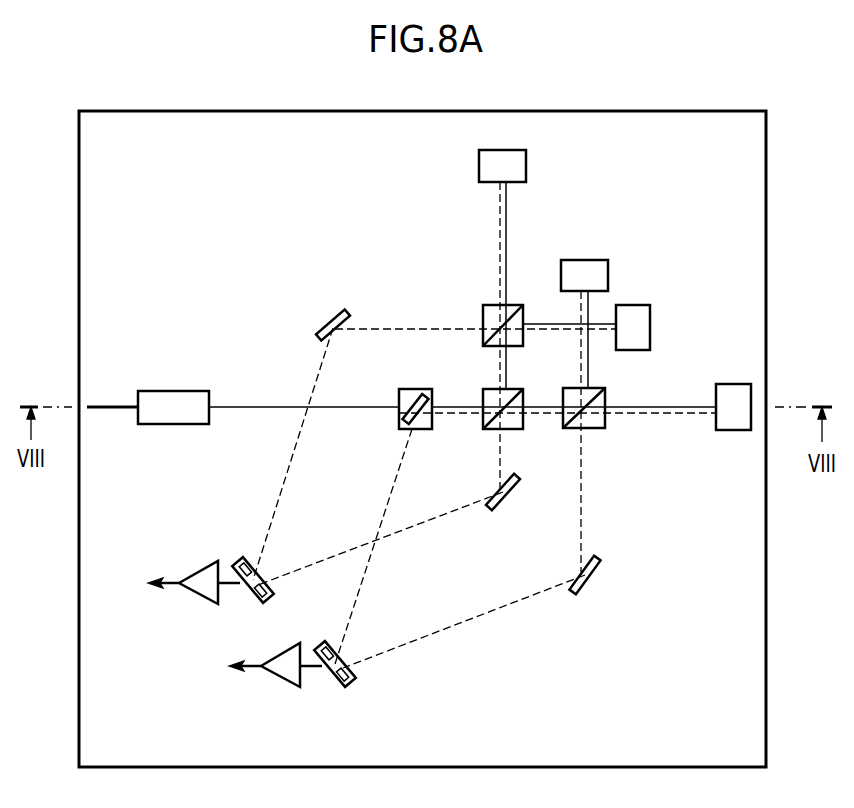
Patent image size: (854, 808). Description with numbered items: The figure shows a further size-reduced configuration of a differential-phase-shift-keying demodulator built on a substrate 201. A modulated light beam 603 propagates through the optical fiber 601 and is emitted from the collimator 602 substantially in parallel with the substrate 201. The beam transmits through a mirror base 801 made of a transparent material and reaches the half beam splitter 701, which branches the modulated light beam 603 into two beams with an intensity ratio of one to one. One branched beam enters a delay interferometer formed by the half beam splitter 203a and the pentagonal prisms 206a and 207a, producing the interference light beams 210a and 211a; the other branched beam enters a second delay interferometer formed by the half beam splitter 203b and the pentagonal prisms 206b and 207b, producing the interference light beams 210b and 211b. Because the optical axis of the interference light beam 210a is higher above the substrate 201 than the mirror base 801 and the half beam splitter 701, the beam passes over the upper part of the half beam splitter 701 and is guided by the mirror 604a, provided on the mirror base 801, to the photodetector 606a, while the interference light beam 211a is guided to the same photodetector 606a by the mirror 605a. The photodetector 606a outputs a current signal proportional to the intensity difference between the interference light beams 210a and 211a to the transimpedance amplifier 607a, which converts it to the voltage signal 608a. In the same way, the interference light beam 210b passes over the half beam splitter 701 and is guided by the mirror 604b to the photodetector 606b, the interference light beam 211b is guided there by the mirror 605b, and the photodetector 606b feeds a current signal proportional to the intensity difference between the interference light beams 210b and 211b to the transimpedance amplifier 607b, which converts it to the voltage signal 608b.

The substrate 201 is at (287, 111).
The half beam splitter 203a is at (605, 398).
The half beam splitter 203b is at (483, 316).
The pentagonal prism 206a is at (716, 426).
The pentagonal prism 206b is at (479, 165).
The pentagonal prism 207a is at (585, 260).
The pentagonal prism 207b is at (650, 325).
The interference light beam 210a is at (537, 413).
The interference light beam 210b is at (500, 364).
The interference light beam 211a is at (581, 515).
The interference light beam 211b is at (368, 328).
The optical fiber 601 is at (115, 410).
The collimator 602 is at (173, 391).
The modulated light beam 603 is at (246, 410).
The mirror 604a is at (408, 430).
The mirror 604b is at (493, 506).
The mirror 605a is at (576, 593).
The mirror 605b is at (319, 338).
The photodetector 606a is at (380, 637).
The photodetector 606b is at (265, 576).
The transimpedance amplifier 607a is at (280, 686).
The transimpedance amplifier 607b is at (192, 594).
The voltage signal 608a is at (250, 664).
The voltage signal 608b is at (168, 580).
The half beam splitter 701 is at (486, 430).
The mirror base 801 is at (399, 396).